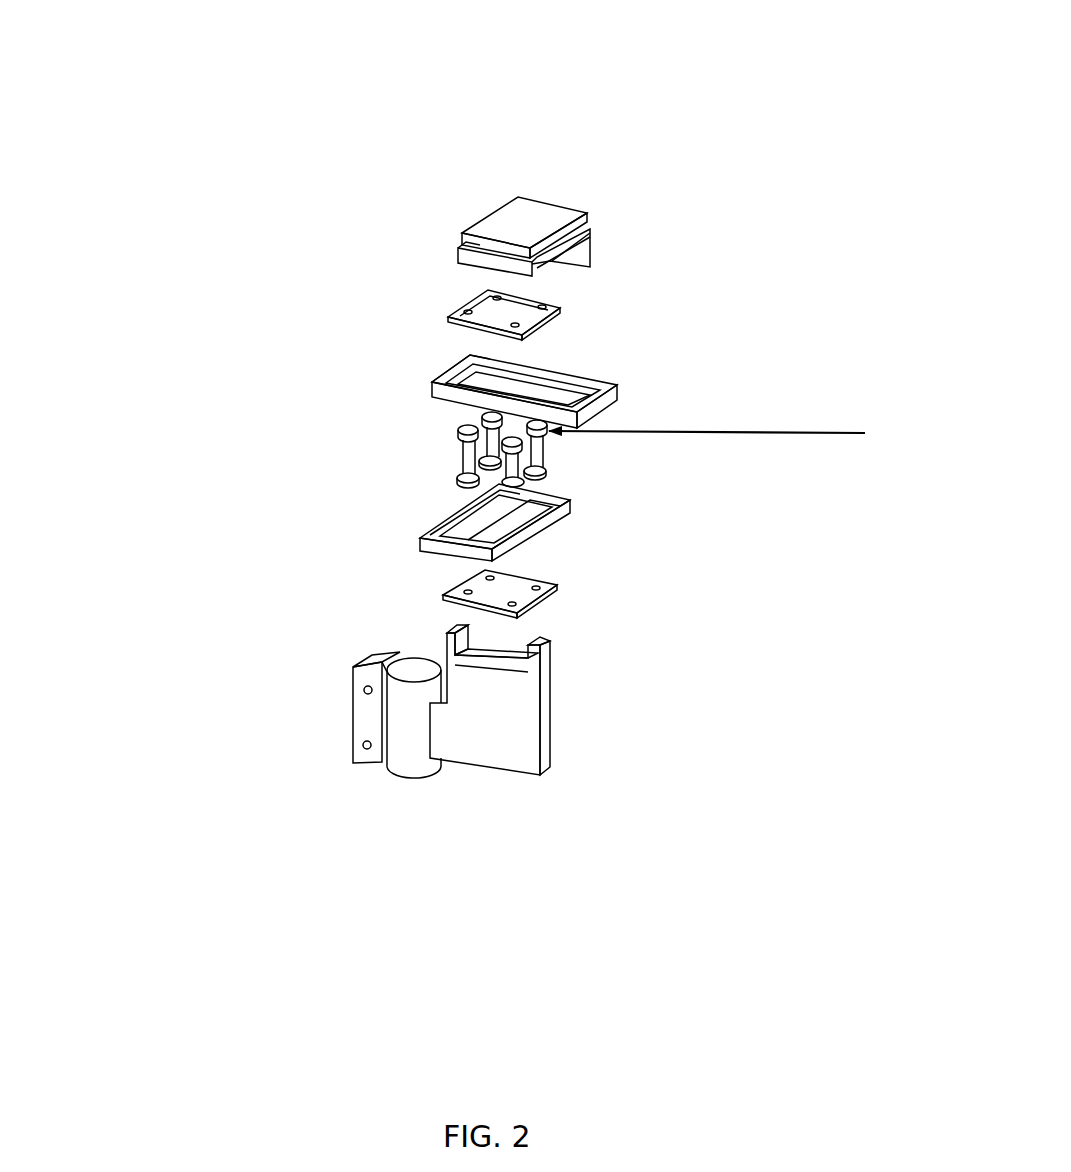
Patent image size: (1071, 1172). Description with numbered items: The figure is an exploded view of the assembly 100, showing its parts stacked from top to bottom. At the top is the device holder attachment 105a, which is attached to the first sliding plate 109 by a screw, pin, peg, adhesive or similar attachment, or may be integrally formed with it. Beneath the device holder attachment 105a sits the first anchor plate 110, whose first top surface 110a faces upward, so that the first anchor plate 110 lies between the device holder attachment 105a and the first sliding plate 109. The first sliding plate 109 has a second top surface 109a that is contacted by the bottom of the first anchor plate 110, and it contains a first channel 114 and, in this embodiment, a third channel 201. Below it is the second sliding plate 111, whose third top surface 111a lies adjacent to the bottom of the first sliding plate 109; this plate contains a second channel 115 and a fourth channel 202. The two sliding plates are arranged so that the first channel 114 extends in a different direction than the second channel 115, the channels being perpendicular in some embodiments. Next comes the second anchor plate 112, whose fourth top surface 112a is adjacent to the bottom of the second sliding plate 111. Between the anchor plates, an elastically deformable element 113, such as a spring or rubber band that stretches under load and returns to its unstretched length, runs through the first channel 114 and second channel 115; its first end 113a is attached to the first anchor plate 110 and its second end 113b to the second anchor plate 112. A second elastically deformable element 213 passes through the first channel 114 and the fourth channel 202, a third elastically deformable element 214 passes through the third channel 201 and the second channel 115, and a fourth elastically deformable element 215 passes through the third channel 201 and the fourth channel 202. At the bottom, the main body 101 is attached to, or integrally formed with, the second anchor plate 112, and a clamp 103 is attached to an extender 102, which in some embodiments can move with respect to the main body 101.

The assembly 100 is at (247, 125).
The main body 101 is at (553, 715).
The extender 102 is at (440, 737).
The clamp 103 is at (352, 709).
The device holder attachment 105a is at (590, 240).
The first sliding plate 109 is at (618, 397).
The second top surface 109a is at (578, 389).
The first anchor plate 110 is at (445, 320).
The first top surface 110a is at (480, 300).
The second sliding plate 111 is at (563, 520).
The third top surface 111a is at (476, 530).
The second anchor plate 112 is at (446, 595).
The fourth top surface 112a is at (511, 590).
The elastically deformable element 113 is at (465, 450).
The first end 113a is at (461, 430).
The second end 113b is at (458, 475).
The first channel 114 is at (447, 375).
The second channel 115 is at (456, 521).
The third channel 201 is at (559, 369).
The fourth channel 202 is at (523, 527).
The second elastically deformable element 213 is at (521, 486).
The third elastically deformable element 214 is at (480, 415).
The fourth elastically deformable element 215 is at (547, 456).